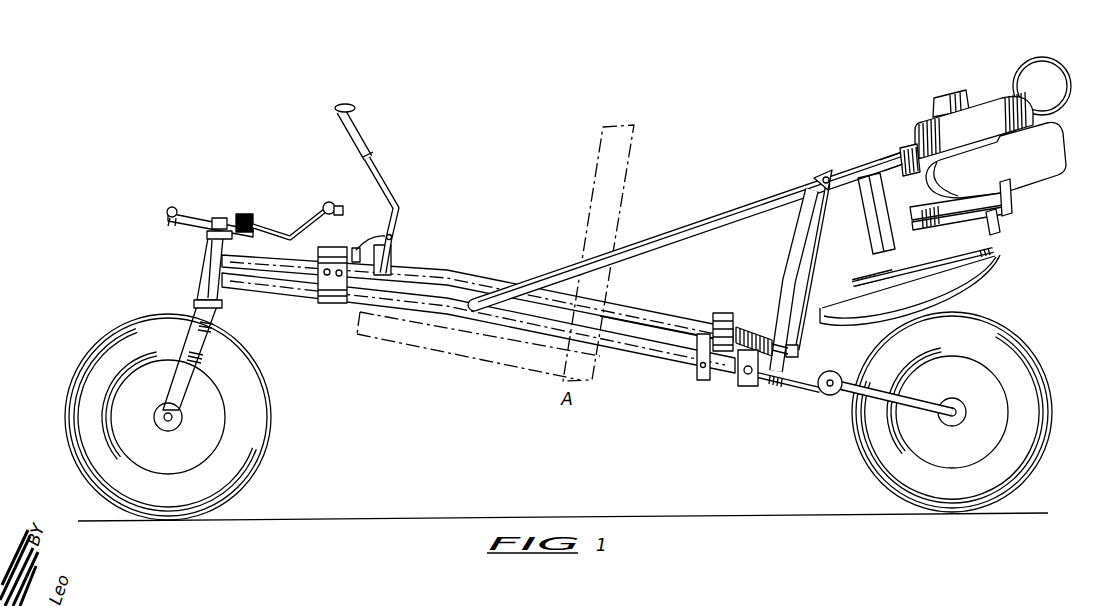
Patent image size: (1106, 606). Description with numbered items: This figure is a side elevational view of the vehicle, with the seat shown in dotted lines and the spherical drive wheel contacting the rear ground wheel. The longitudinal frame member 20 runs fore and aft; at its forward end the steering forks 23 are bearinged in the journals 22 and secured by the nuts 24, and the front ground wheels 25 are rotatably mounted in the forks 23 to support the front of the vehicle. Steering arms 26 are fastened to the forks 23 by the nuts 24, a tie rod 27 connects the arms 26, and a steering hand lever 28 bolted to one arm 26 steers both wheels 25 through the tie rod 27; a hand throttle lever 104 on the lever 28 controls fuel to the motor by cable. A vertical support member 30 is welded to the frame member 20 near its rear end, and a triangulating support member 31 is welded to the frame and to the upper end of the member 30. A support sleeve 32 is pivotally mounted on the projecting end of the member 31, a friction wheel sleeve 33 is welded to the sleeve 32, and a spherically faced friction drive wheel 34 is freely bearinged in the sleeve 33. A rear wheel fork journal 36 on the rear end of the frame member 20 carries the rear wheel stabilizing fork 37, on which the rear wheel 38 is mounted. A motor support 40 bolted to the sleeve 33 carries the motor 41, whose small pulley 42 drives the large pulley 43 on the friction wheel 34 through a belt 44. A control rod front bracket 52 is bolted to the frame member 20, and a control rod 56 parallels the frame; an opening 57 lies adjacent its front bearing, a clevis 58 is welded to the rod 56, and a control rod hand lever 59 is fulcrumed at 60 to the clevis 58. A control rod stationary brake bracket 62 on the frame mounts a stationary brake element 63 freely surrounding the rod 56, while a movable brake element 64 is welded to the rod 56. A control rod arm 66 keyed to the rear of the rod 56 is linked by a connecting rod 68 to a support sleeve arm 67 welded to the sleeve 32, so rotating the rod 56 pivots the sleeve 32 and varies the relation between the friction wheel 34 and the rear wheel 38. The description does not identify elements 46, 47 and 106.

The longitudinal frame member 20 is at (302, 286).
The journals 22 is at (208, 268).
The steering forks 23 is at (212, 312).
The nuts 24 is at (221, 218).
The front ground wheels 25 is at (264, 422).
The steering arms 26 is at (186, 227).
The tie rod 27 is at (167, 212).
The steering hand lever 28 is at (298, 228).
The vertical support member 30 is at (797, 259).
The triangulating support member 31 is at (719, 219).
The support sleeve 32 is at (875, 166).
The friction wheel sleeve 33 is at (874, 220).
The spherically faced friction drive wheel 34 is at (968, 284).
The rear wheel fork journal 36 is at (820, 394).
The rear wheel stabilizing fork 37 is at (856, 403).
The rear wheel 38 is at (1052, 416).
The motor support 40 is at (920, 228).
The motor 41 is at (1023, 172).
The small pulley 42 is at (1001, 241).
The large pulley 43 is at (870, 275).
The belt 44 is at (997, 257).
The link rod 46 is at (738, 352).
The clevis 47 is at (747, 387).
The control rod front bracket 52 is at (320, 261).
The control rod 56 is at (655, 318).
The opening 57 is at (394, 260).
The clevis 58 is at (356, 244).
The control rod hand lever 59 is at (387, 178).
The fulcrum 60 is at (393, 237).
The control rod stationary brake bracket 62 is at (702, 380).
The control rod stationary brake element 63 is at (718, 316).
The control rod movable brake element 64 is at (740, 320).
The control rod arm 66 is at (798, 353).
The support sleeve arm 67 is at (835, 180).
The connecting rod 68 is at (806, 327).
The hand throttle lever 104 is at (339, 214).
The plate 106 is at (1012, 198).